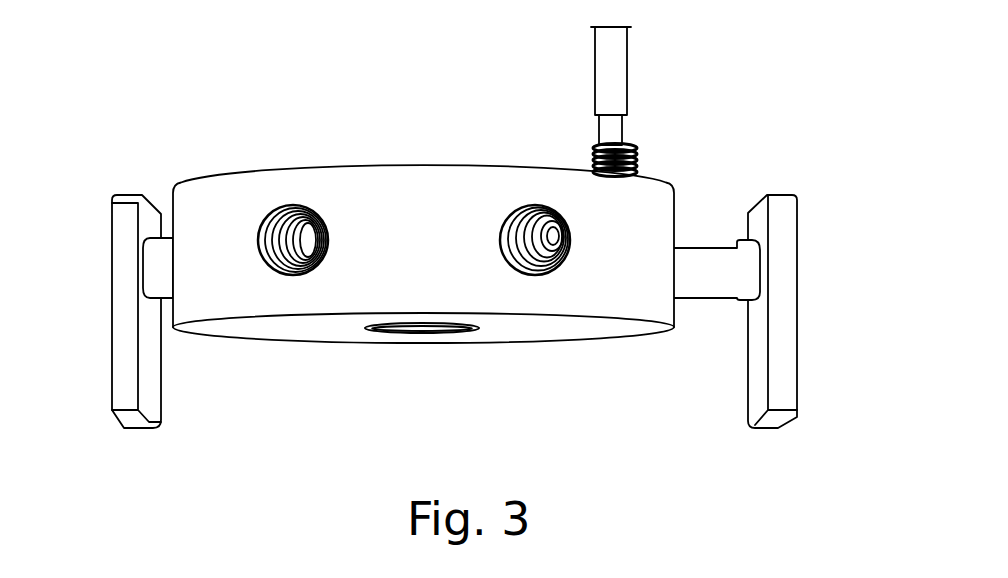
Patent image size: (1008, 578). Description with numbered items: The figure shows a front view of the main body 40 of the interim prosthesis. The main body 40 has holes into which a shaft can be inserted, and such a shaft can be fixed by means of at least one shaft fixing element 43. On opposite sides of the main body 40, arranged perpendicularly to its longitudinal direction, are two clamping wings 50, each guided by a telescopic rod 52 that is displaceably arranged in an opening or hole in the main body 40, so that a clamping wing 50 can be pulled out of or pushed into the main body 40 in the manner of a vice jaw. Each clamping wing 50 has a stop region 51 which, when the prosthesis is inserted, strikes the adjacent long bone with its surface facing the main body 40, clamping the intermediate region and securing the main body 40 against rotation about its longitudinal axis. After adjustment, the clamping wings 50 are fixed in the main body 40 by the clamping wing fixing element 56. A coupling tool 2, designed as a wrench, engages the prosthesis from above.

The coupling tool 2 is at (615, 59).
The main body 40 is at (214, 172).
The shaft fixing element 43 is at (537, 206).
The clamping wing 50 is at (111, 409).
The stop region 51 is at (778, 393).
The telescopic rod 52 is at (715, 290).
The clamping wing fixing element 56 is at (637, 162).